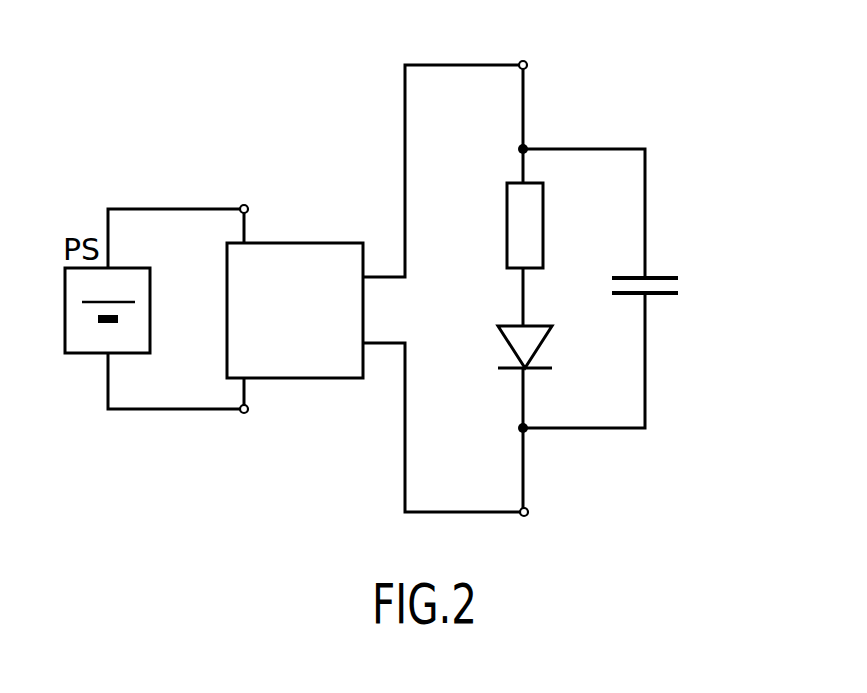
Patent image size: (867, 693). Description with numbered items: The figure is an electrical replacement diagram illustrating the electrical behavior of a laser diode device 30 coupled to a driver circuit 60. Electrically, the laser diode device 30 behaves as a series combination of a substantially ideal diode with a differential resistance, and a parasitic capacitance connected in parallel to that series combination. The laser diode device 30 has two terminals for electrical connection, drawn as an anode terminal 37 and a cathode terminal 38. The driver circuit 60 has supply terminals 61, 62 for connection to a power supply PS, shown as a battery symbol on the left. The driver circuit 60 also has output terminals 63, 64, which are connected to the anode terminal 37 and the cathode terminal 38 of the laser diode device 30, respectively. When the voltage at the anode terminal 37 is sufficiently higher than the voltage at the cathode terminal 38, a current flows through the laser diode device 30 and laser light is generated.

The laser diode device 30 is at (692, 97).
The anode terminal 37 is at (542, 95).
The cathode terminal 38 is at (543, 483).
The driver circuit 60 is at (285, 325).
The supply terminal 61 is at (242, 203).
The supply terminal 62 is at (243, 419).
The output terminal 63 is at (420, 179).
The output terminal 64 is at (421, 422).